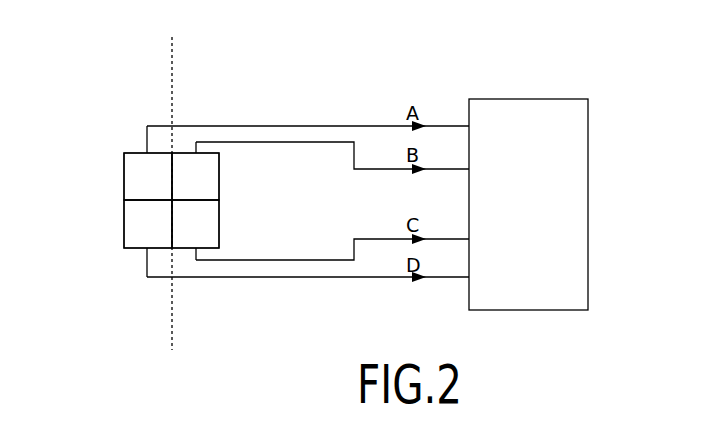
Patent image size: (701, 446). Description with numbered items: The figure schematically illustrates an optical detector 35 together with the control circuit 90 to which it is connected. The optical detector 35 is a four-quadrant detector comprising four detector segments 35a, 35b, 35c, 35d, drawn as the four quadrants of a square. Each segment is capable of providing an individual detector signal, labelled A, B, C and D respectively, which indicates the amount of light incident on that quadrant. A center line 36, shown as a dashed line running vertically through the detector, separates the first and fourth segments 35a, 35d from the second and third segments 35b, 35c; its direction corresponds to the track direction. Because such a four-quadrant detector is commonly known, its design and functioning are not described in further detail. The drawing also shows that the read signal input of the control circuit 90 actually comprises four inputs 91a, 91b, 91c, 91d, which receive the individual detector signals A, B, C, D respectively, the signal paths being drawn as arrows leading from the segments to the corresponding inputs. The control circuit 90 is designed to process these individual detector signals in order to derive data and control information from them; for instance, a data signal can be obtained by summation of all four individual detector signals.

The optical detector 35 is at (148, 102).
The first detector segment 35a is at (124, 178).
The second detector segment 35b is at (219, 178).
The third detector segment 35c is at (219, 223).
The fourth detector segment 35d is at (124, 223).
The center line 36 is at (173, 90).
The control circuit 90 is at (560, 218).
The first input 91a is at (467, 127).
The second input 91b is at (467, 169).
The third input 91c is at (466, 240).
The fourth input 91d is at (467, 279).